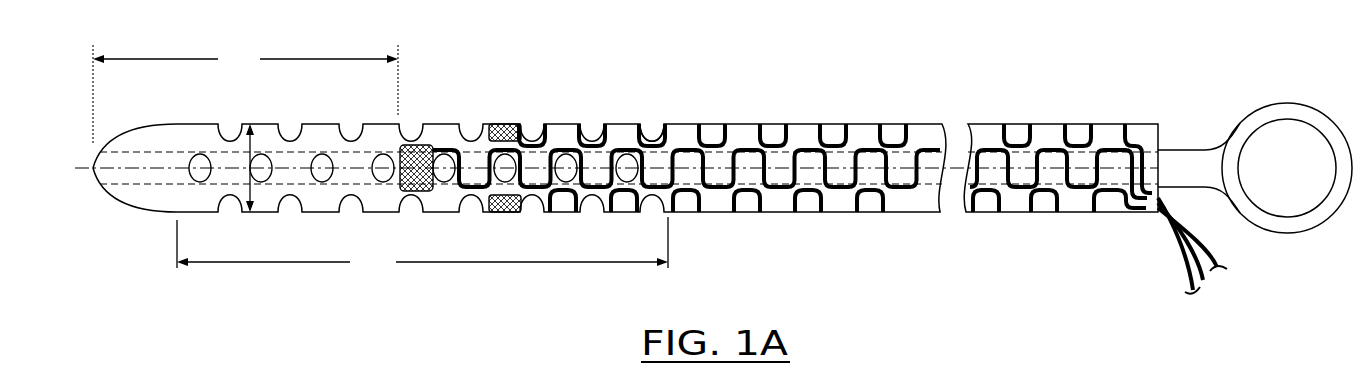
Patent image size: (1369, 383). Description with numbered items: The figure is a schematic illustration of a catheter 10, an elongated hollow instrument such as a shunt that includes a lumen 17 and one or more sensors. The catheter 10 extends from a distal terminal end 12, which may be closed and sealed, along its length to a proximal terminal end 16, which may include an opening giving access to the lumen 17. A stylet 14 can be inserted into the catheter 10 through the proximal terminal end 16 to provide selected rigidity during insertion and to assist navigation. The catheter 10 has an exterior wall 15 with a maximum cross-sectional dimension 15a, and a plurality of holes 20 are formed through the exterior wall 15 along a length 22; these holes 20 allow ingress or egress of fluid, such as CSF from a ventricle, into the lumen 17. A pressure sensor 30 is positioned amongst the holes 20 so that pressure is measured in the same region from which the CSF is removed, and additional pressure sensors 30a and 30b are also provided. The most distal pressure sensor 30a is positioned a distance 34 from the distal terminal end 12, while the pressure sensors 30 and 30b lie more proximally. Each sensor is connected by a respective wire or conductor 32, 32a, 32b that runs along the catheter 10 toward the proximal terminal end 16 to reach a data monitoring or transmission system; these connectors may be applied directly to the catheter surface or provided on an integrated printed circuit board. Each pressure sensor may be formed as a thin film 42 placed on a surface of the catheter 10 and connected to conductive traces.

The catheter 10 is at (893, 60).
The distal terminal end 12 is at (92, 170).
The stylet 14 is at (1287, 102).
The exterior wall 15 is at (212, 123).
The maximum cross-sectional dimension 15a is at (250, 212).
The proximal terminal end 16 is at (1160, 135).
The lumen 17 is at (1018, 148).
The hole 20 is at (655, 133).
The length 22 is at (422, 246).
The pressure sensor 30 is at (500, 126).
The pressure sensor 30a is at (399, 146).
The pressure sensor 30b is at (505, 212).
The wire 32 is at (542, 126).
The conductor 32a is at (441, 147).
The conductor 32b is at (548, 203).
The distance 34 is at (245, 93).
The thin film 42 is at (217, 374).